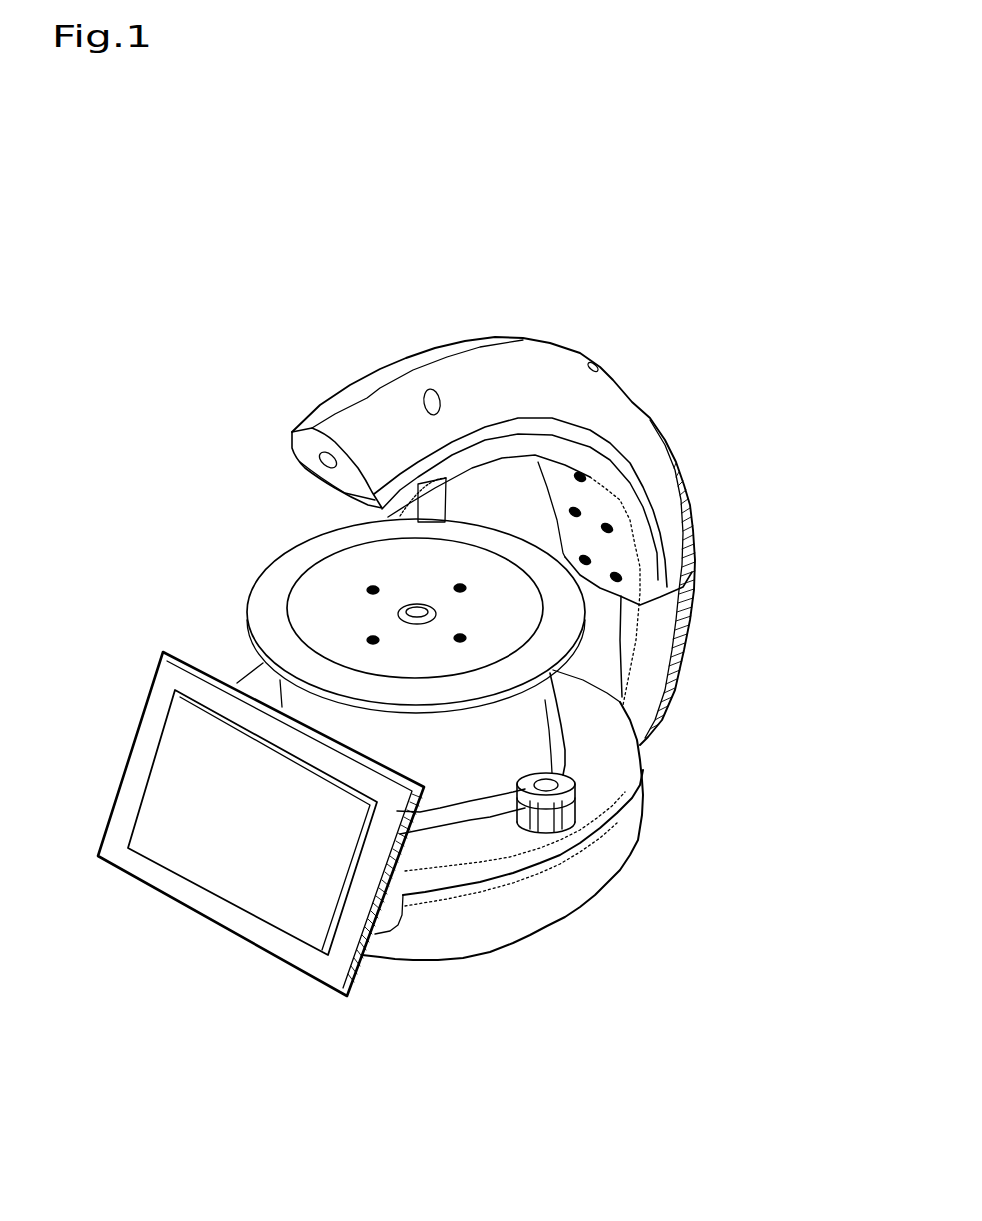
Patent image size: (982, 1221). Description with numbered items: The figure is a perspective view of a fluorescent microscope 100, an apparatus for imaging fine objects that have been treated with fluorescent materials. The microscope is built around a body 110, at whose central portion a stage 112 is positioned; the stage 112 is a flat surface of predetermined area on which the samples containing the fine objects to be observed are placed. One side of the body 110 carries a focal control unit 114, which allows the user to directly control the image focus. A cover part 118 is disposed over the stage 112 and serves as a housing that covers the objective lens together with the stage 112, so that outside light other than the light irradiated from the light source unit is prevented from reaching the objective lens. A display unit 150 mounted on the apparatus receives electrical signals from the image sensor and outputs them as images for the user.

The fluorescent microscope 100 is at (783, 151).
The body 110 is at (571, 472).
The stage 112 is at (323, 592).
The focal control unit 114 is at (560, 812).
The cover part 118 is at (440, 857).
The display unit 150 is at (232, 842).